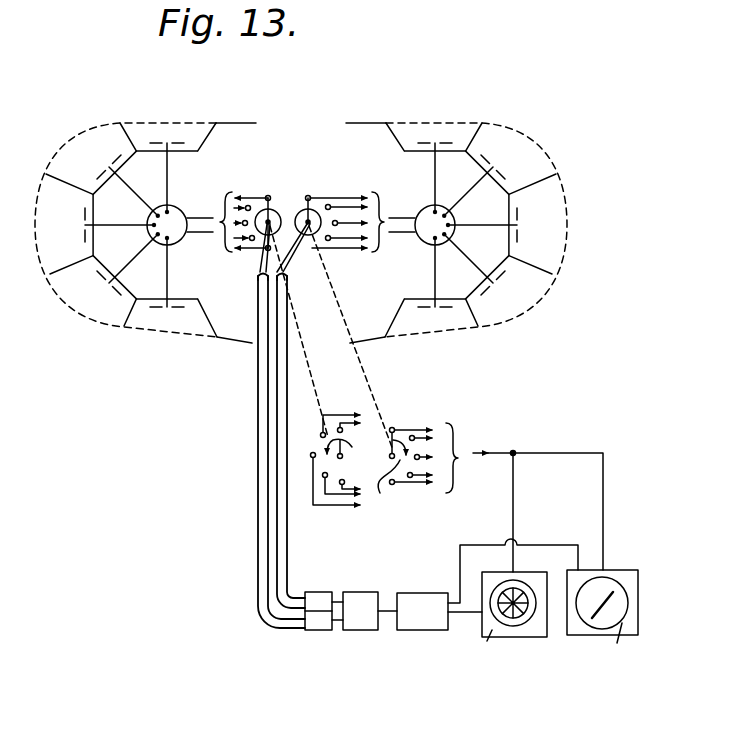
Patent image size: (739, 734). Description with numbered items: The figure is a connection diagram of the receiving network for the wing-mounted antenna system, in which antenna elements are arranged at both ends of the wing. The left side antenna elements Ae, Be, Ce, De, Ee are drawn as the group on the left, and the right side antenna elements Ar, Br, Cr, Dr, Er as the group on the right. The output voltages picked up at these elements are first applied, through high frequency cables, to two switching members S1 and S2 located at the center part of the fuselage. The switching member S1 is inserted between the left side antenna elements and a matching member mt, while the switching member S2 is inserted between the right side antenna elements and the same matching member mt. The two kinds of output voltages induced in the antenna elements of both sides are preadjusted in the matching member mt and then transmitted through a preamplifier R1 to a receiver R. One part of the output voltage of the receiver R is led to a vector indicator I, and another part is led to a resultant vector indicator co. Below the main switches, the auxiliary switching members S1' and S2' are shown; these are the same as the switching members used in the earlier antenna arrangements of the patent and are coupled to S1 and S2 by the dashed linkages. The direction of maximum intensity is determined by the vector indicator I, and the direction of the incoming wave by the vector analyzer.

The field coil A of transmitting selsyn Ae is at (178, 143).
The field coil B of transmitting selsyn Be is at (116, 166).
The field coil C of transmitting selsyn Ce is at (83, 212).
The field coil D of transmitting selsyn De is at (109, 284).
The field coil E of transmitting selsyn Ee is at (182, 308).
The field coil A of receiving selsyn Ar is at (449, 143).
The field coil B of receiving selsyn Br is at (501, 167).
The field coil C of receiving selsyn Cr is at (517, 225).
The field coil D of receiving selsyn Dr is at (495, 271).
The field coil E of receiving selsyn Er is at (437, 307).
The switching member S1 is at (281, 307).
The switching member S2 is at (335, 314).
The switching member S1' is at (336, 460).
The switching member S2' is at (405, 471).
The matching member mt is at (321, 618).
The preamplifier R1 is at (365, 617).
The receiver R is at (422, 611).
The vector indicator I is at (498, 625).
The resultant vector indicator co is at (625, 633).